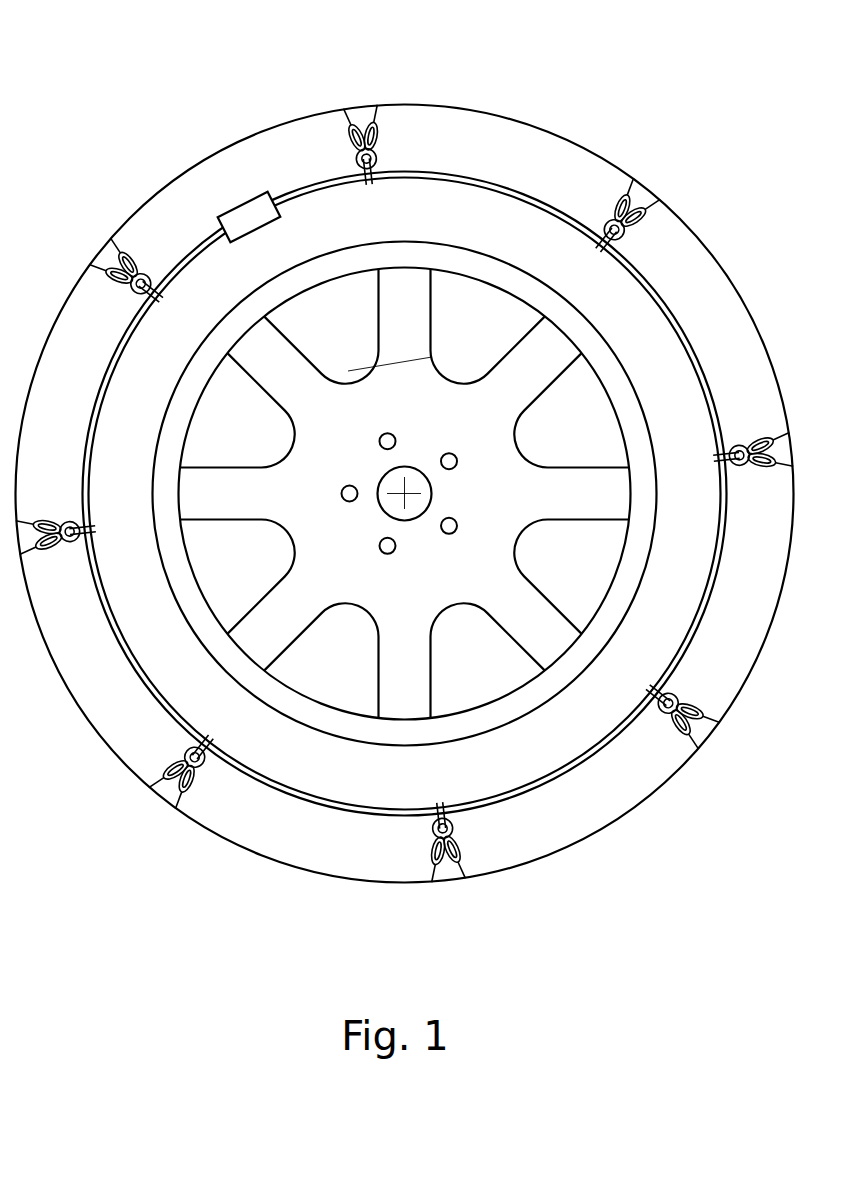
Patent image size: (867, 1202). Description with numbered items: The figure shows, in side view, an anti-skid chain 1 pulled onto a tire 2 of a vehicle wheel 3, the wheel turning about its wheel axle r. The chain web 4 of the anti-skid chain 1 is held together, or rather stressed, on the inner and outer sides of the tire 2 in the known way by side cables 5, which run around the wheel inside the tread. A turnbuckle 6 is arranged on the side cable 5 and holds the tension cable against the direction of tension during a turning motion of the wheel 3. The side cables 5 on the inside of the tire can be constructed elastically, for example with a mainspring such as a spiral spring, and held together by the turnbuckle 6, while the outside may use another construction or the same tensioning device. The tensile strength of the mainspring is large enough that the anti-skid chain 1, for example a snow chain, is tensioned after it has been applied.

The anti-skid chain 1 is at (380, 110).
The tire 2 is at (160, 172).
The vehicle wheel 3 is at (325, 716).
The chain web 4 is at (645, 192).
The side cables 5 is at (672, 318).
The turnbuckle 6 is at (262, 207).
The wheel axle r is at (404, 494).